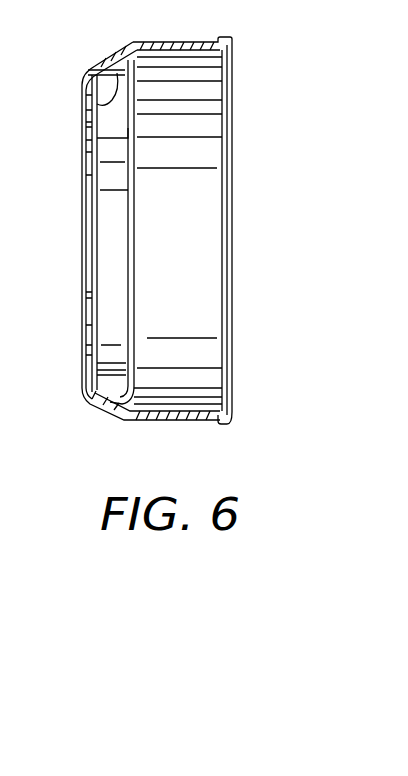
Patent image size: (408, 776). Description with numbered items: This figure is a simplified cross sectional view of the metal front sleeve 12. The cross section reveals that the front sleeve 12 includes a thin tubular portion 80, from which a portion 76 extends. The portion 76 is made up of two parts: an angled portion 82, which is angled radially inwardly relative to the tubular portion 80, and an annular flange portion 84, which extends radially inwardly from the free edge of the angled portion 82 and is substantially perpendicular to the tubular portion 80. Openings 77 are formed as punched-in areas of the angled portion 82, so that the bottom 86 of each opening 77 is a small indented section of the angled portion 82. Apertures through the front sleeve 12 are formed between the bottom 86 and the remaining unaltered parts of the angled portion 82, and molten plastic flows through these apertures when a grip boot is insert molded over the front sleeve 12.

The front sleeve 12 is at (62, 270).
The portion 76 is at (84, 58).
The openings 77 is at (115, 400).
The thin tubular portion 80 is at (173, 58).
The angled portion 82 is at (97, 406).
The annular flange portion 84 is at (92, 382).
The bottom 86 is at (92, 100).